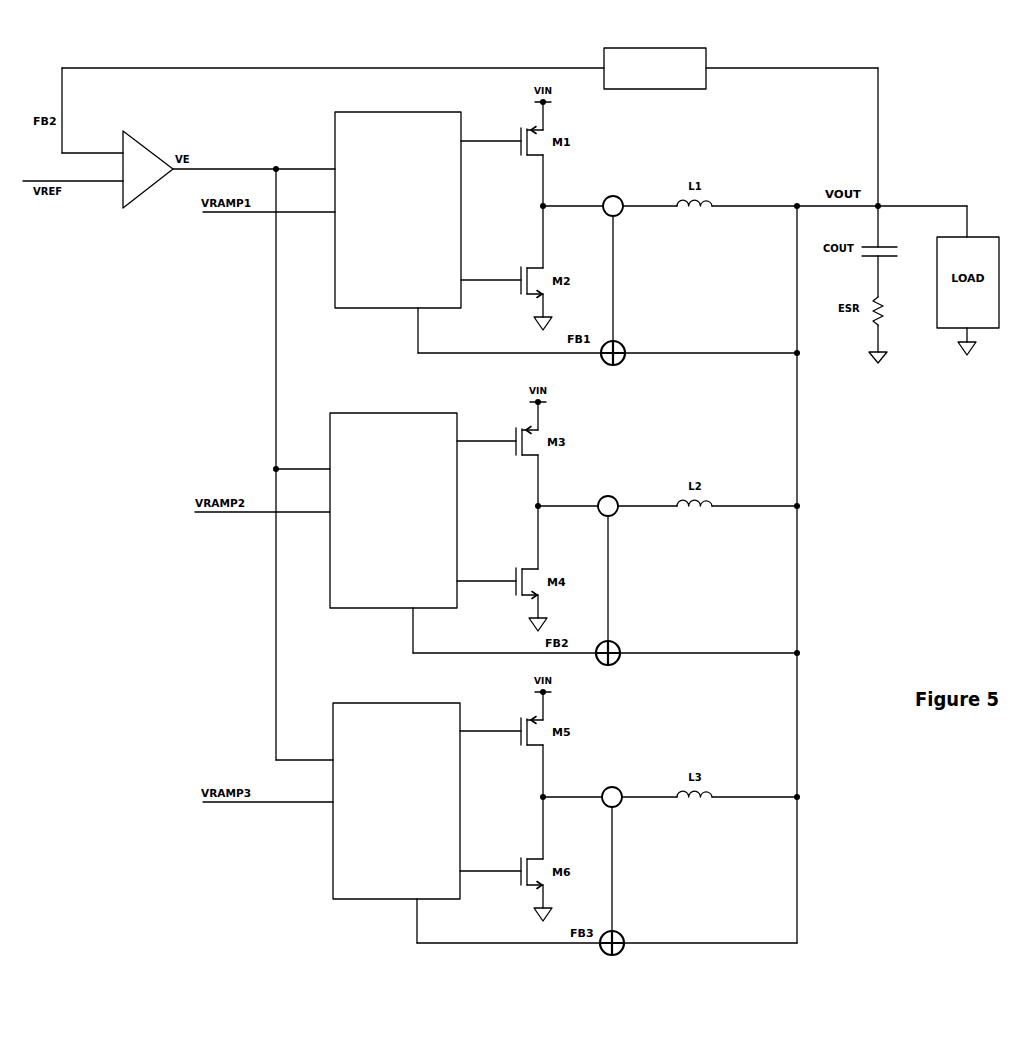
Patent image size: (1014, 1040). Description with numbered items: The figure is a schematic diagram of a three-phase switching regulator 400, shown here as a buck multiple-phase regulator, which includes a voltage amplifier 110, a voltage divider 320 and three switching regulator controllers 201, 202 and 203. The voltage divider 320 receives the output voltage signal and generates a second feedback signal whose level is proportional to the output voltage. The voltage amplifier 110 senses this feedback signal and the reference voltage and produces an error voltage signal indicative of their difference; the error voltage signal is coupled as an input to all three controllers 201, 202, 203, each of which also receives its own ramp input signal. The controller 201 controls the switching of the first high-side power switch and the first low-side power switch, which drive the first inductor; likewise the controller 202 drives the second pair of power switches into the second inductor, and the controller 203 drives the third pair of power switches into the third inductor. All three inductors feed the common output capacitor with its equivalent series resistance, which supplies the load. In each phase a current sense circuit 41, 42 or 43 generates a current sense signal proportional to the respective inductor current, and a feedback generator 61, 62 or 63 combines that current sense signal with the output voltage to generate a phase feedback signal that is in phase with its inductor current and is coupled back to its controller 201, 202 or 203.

The voltage amplifier 110 is at (137, 138).
The voltage divider 320 is at (706, 61).
The switching regulator controller 201 is at (398, 210).
The switching regulator controller 202 is at (393, 510).
The switching regulator controller 203 is at (396, 801).
The current sense circuit 41 is at (619, 194).
The current sense circuit 42 is at (616, 495).
The current sense circuit 43 is at (617, 785).
The feedback generator 61 is at (626, 338).
The feedback generator 62 is at (620, 641).
The feedback generator 63 is at (623, 931).
The 3-phase switching regulator 400 is at (870, 522).